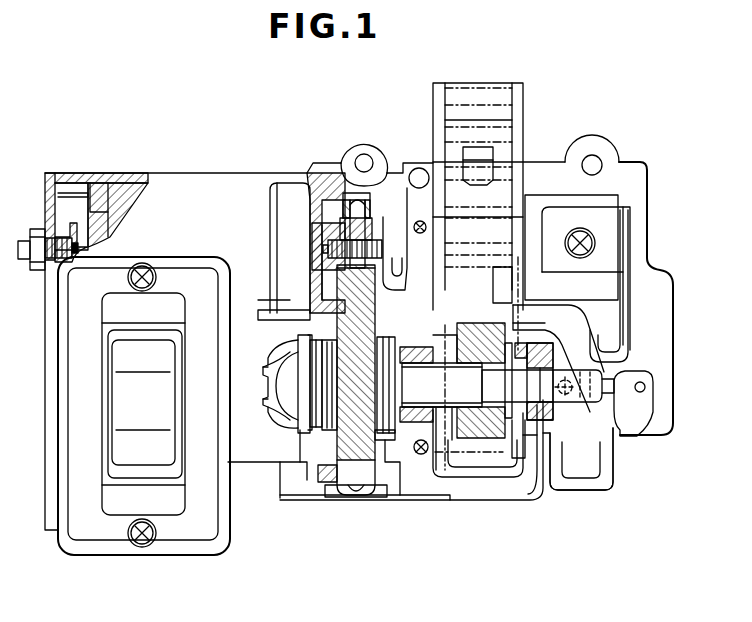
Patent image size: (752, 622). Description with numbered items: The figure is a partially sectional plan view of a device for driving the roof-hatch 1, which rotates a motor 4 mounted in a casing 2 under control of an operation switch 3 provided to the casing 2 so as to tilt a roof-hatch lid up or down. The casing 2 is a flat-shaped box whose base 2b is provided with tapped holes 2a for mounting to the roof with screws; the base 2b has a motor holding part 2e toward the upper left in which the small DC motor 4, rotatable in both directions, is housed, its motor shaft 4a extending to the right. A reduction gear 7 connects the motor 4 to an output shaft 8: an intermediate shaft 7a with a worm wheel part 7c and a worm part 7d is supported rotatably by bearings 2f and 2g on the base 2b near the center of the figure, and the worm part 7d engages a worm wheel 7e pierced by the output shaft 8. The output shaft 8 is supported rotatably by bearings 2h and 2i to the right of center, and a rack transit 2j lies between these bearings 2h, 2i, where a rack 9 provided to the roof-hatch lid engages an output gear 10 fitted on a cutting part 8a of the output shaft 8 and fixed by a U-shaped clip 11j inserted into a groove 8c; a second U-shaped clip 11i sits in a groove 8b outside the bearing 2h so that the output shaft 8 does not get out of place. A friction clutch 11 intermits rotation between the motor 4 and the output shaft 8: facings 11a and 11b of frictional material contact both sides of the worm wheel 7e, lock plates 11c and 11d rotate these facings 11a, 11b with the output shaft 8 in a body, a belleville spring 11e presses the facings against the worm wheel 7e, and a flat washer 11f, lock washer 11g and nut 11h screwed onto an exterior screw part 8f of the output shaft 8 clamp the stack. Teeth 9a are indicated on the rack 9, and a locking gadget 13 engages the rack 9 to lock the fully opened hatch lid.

The device for driving the roof-hatch 1 is at (620, 150).
The casing 2 is at (312, 178).
The tapped holes 2a is at (364, 150).
The base 2b is at (322, 197).
The motor holding part 2e is at (90, 186).
The bearing 2f is at (340, 215).
The bearing 2g is at (355, 492).
The bearing 2h is at (553, 440).
The bearing 2i is at (395, 440).
The rack transit 2j is at (433, 170).
The operation switch 3 is at (165, 278).
The motor 4 is at (290, 240).
The motor shaft 4a is at (265, 300).
The reduction gear 7 is at (380, 262).
The intermediate shaft 7a is at (360, 470).
The worm wheel part 7c is at (378, 248).
The worm part 7d is at (385, 305).
The worm wheel 7e is at (345, 225).
The output shaft 8 is at (440, 445).
The cutting part 8a is at (590, 330).
The groove 8b is at (600, 370).
The groove 8c is at (500, 445).
The exterior screw part 8f is at (265, 372).
The rack 9 is at (523, 142).
The rack teeth 9a is at (495, 125).
The output gear 10 is at (478, 437).
The friction clutch 11 is at (320, 440).
The facing 11a is at (325, 440).
The facing 11b is at (385, 440).
The lock plate 11c is at (285, 400).
The lock plate 11d is at (473, 440).
The belleville spring 11e is at (300, 470).
The flat washer 11f is at (300, 340).
The lock washer 11g is at (282, 432).
The nut 11h is at (266, 404).
The U-shaped clip 11i is at (563, 437).
The U-shaped clip 11j is at (540, 425).
The locking gadget 13 is at (623, 410).